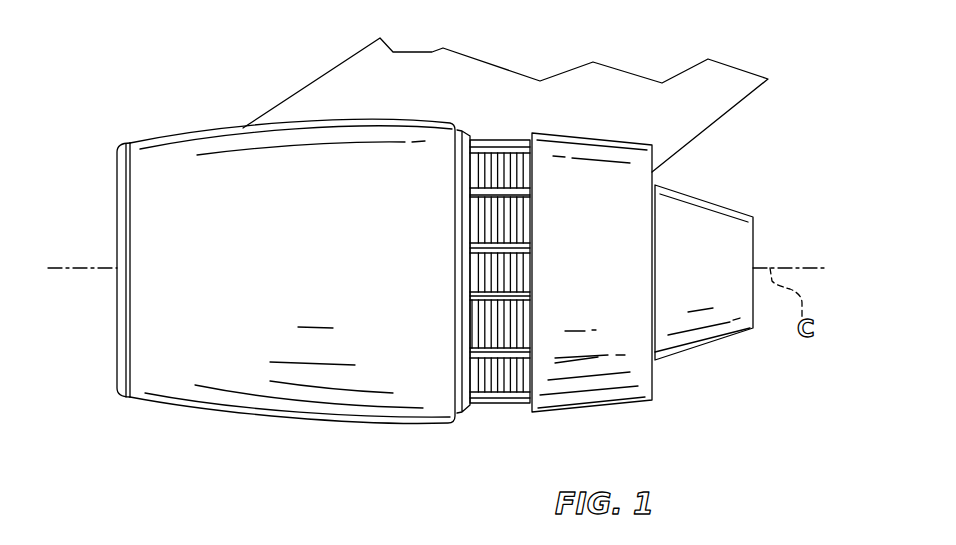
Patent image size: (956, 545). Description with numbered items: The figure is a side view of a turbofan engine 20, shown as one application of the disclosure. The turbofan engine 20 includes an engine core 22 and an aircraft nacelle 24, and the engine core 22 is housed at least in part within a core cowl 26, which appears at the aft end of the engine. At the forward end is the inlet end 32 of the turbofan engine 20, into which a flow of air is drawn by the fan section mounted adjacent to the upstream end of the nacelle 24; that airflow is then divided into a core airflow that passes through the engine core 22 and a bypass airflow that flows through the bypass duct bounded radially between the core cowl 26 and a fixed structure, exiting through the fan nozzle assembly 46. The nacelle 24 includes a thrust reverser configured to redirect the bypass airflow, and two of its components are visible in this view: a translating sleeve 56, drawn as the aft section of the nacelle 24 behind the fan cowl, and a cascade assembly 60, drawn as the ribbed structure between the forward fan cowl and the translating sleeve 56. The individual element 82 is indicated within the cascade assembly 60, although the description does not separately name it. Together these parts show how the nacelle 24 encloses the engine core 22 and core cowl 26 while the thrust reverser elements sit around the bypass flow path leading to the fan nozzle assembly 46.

The turbofan engine 20 is at (155, 96).
The engine core 22 is at (662, 373).
The aircraft nacelle 24 is at (252, 105).
The core cowl 26 is at (708, 201).
The inlet end 32 is at (117, 372).
The fan nozzle assembly 46 is at (621, 424).
The translating sleeve 56 is at (598, 138).
The cascade assembly 60 is at (488, 424).
The cascade vane / strut 82 is at (522, 373).